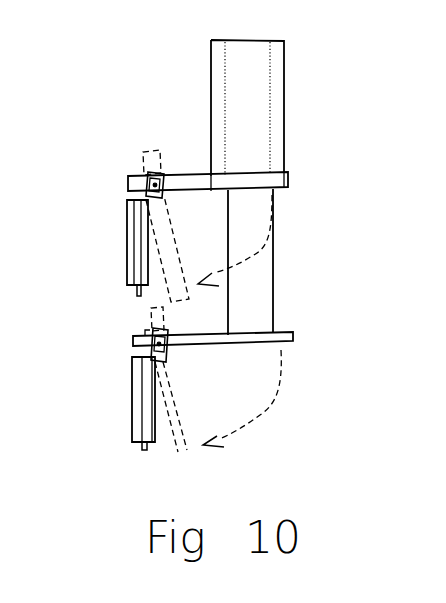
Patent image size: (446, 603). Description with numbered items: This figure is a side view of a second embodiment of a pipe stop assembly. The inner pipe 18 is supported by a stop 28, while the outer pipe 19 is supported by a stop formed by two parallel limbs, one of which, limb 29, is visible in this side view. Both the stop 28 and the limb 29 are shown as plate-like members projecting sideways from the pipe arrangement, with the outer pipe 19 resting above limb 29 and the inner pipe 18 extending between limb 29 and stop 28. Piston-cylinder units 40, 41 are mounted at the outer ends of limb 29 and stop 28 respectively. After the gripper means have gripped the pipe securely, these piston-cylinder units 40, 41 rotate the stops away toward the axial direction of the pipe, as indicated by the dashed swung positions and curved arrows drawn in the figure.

The outer pipe 19 is at (284, 72).
The limb 29 is at (289, 179).
The inner pipe 18 is at (262, 284).
The stop 28 is at (294, 334).
The piston-cylinder unit 40 is at (127, 235).
The piston-cylinder unit 41 is at (132, 386).